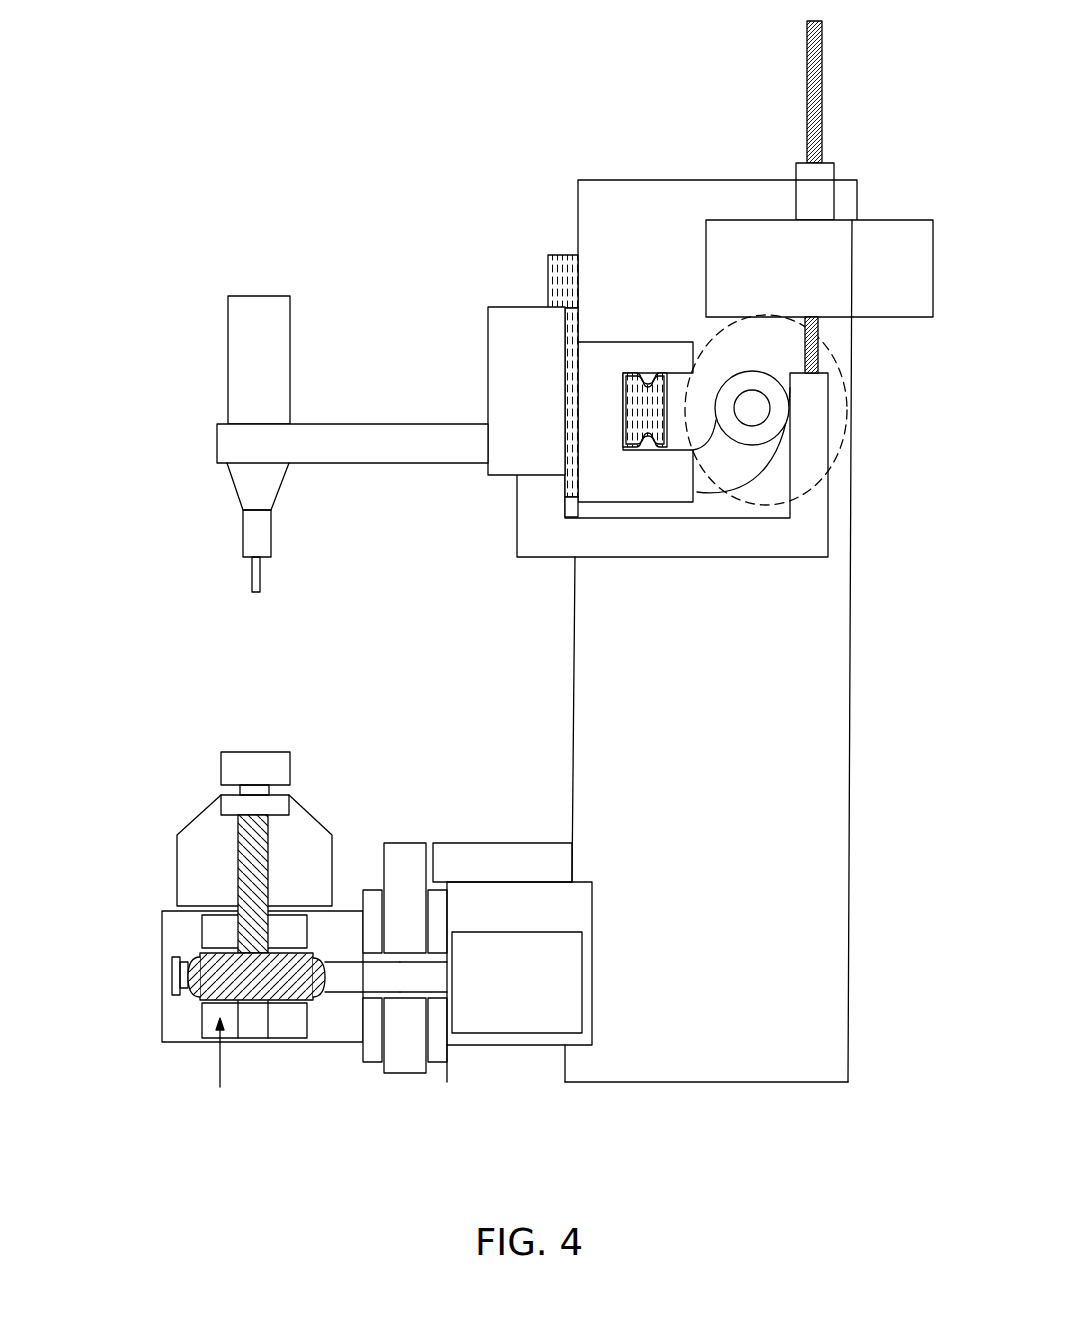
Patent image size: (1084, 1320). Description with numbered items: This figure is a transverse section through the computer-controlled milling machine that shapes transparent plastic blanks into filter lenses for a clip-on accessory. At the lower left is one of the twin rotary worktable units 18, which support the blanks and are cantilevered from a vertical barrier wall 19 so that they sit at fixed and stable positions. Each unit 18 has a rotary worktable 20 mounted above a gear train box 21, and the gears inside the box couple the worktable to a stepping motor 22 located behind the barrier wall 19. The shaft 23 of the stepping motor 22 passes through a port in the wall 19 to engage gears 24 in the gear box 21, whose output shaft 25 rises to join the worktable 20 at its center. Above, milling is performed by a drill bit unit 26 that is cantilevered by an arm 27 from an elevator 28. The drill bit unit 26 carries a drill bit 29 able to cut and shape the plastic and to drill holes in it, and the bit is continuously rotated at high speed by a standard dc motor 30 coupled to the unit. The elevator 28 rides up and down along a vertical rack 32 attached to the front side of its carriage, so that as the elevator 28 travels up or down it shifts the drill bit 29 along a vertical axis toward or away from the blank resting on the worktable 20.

The rotary worktable unit 18 is at (165, 895).
The vertical barrier wall 19 is at (405, 852).
The rotary worktable 20 is at (245, 768).
The gear train box 21 is at (162, 1015).
The stepping motor 22 is at (531, 1003).
The shaft 23 is at (408, 978).
The gears 24 is at (349, 978).
The output shaft 25 is at (250, 878).
The drill bit unit 26 is at (284, 492).
The arm 27 is at (400, 450).
The elevator 28 is at (518, 350).
The drill bit 29 is at (262, 573).
The dc motor 30 is at (268, 333).
The vertical rack 32 is at (560, 282).